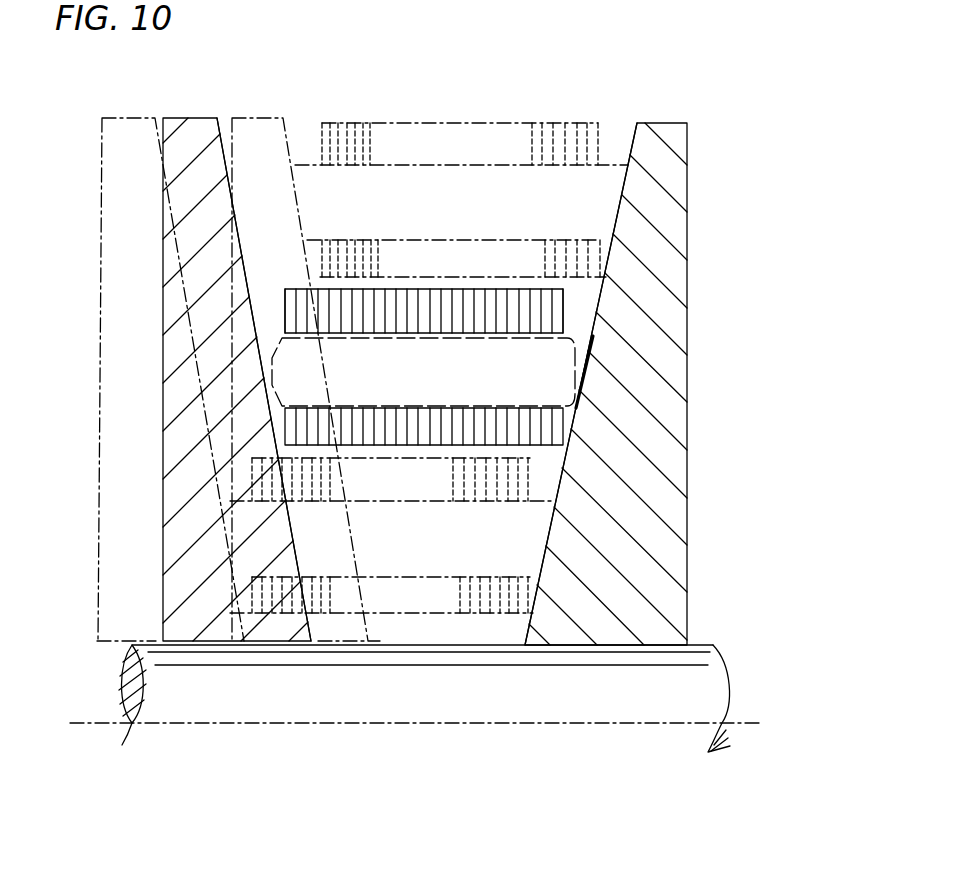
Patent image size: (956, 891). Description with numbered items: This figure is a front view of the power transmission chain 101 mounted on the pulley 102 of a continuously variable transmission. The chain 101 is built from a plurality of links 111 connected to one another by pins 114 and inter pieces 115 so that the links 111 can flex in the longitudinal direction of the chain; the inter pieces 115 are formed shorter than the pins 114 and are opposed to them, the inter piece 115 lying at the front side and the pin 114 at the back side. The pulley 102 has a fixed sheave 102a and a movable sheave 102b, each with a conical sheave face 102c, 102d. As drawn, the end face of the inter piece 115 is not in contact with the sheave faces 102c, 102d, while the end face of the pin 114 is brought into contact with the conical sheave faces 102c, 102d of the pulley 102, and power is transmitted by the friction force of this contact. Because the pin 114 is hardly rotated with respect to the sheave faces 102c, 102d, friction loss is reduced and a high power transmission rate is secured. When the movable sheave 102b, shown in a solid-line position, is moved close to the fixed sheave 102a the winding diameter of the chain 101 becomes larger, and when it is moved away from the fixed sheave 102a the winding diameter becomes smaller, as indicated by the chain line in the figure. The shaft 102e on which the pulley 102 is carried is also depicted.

The power transmission chain 101 is at (495, 123).
The pulley 102 is at (655, 384).
The fixed sheave 102a is at (663, 503).
The movable sheave 102b is at (138, 118).
The conical sheave face 102c is at (622, 200).
The conical sheave face 102d is at (236, 205).
The shaft 102e is at (705, 690).
The link 111 is at (312, 296).
The pin 114 is at (582, 343).
The inter piece 115 is at (590, 382).